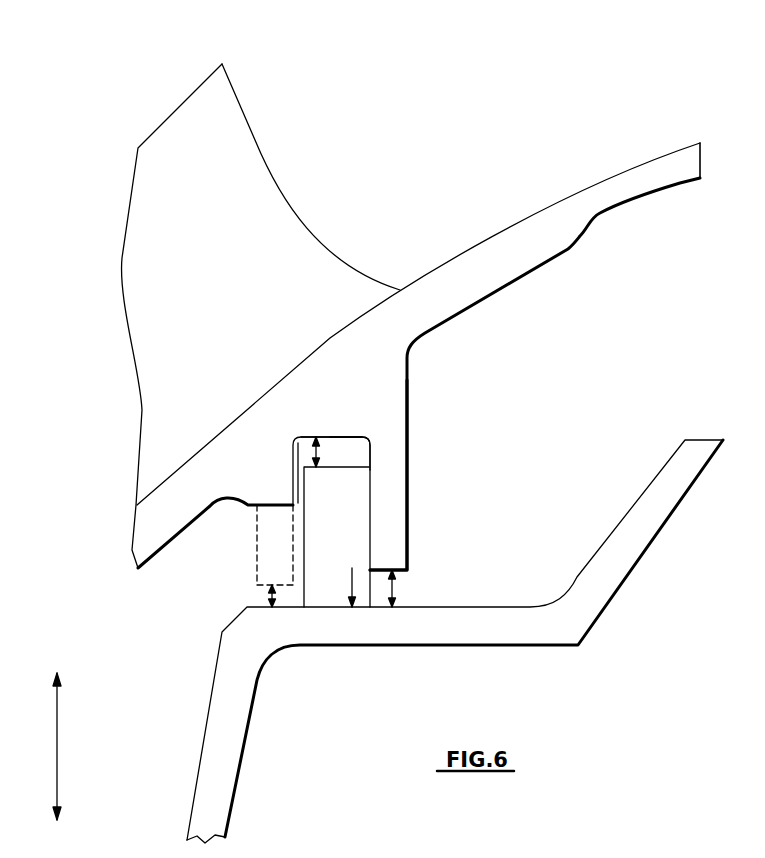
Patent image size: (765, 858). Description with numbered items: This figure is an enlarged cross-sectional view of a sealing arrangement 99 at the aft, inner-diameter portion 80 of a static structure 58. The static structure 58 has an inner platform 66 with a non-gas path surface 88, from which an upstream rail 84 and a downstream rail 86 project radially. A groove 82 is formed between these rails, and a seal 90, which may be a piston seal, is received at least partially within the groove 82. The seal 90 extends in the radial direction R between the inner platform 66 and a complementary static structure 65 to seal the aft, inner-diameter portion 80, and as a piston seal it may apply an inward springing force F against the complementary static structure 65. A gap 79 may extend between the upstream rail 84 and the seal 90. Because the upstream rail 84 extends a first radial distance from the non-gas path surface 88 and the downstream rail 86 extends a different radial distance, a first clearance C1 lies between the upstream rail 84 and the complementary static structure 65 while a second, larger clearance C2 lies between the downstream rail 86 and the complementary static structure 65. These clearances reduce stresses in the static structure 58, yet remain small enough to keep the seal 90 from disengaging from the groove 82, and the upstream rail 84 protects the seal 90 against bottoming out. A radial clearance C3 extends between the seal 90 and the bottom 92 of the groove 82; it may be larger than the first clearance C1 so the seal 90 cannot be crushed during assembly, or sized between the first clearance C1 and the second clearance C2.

The static structure 58 is at (388, 104).
The aft, inner-diameter portion 80 is at (570, 124).
The sealing arrangement 99 is at (463, 410).
The inner platform 66 is at (172, 495).
The gap 79 is at (299, 436).
The groove 82 is at (357, 450).
The bottom of the groove 92 is at (331, 440).
The downstream rail 86 is at (407, 487).
The seal 90 is at (330, 593).
The upstream rail 84 is at (257, 518).
The non-gas path surface 88 is at (150, 558).
The complementary static structure 65 is at (222, 788).
The first clearance C1 is at (267, 597).
The second clearance C2 is at (397, 590).
The radial clearance C3 is at (320, 458).
The inward springing force F is at (352, 578).
The radial direction R is at (60, 750).